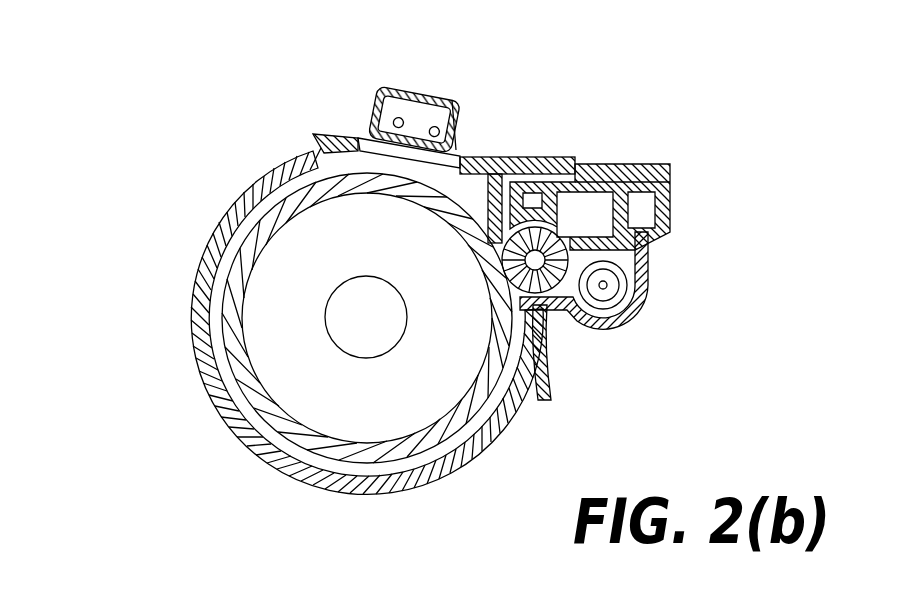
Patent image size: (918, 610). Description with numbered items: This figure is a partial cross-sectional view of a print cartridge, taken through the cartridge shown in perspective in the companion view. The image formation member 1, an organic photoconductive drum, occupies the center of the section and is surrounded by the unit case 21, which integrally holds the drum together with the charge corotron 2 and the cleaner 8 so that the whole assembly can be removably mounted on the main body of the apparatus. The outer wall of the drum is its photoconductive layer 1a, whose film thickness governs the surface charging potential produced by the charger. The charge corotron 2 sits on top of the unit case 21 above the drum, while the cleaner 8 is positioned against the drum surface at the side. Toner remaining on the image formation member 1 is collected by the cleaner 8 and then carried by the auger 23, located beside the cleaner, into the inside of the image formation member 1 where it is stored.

The image formation member 1 is at (272, 336).
The photoconductive layer 1a is at (405, 458).
The charge corotron 2 is at (414, 84).
The cleaner 8 is at (550, 307).
The unit case 21 is at (223, 203).
The auger 23 is at (647, 304).